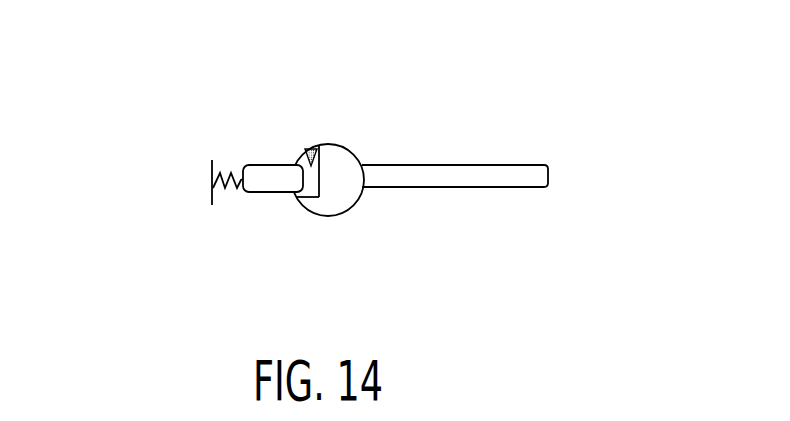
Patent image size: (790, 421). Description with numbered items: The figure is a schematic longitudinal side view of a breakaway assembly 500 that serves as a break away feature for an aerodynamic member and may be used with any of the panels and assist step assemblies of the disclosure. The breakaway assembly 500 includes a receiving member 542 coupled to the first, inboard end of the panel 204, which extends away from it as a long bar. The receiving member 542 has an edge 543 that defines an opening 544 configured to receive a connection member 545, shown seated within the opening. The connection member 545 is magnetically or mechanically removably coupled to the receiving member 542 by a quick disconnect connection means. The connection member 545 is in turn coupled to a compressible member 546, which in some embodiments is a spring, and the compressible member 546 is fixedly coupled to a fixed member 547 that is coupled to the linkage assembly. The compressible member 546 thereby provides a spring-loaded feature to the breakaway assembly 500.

The breakaway assembly 500 is at (156, 84).
The receiving member 542 is at (337, 200).
The edge 543 is at (306, 151).
The opening 544 is at (320, 151).
The connection member 545 is at (265, 180).
The compressible member 546 is at (232, 190).
The fixed member 547 is at (212, 205).
The panel 204 is at (452, 178).